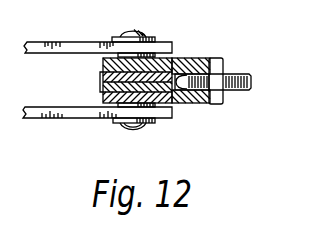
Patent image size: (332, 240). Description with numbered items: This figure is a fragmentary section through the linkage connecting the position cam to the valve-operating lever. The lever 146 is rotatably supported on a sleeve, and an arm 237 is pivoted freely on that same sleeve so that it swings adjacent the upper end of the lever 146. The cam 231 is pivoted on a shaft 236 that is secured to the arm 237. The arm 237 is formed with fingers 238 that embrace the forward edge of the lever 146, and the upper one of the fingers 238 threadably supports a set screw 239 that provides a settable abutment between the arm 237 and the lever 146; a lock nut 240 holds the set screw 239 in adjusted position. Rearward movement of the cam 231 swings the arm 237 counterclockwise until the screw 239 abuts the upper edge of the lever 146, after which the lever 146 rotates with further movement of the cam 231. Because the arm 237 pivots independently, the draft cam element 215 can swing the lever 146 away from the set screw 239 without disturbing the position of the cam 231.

The cam element 215 is at (89, 42).
The cam 231 is at (78, 117).
The lever 146 is at (100, 78).
The shaft 236 is at (128, 128).
The arm 237 is at (181, 99).
The fingers 238 is at (180, 58).
The set screw 239 is at (241, 74).
The lock nut 240 is at (214, 104).